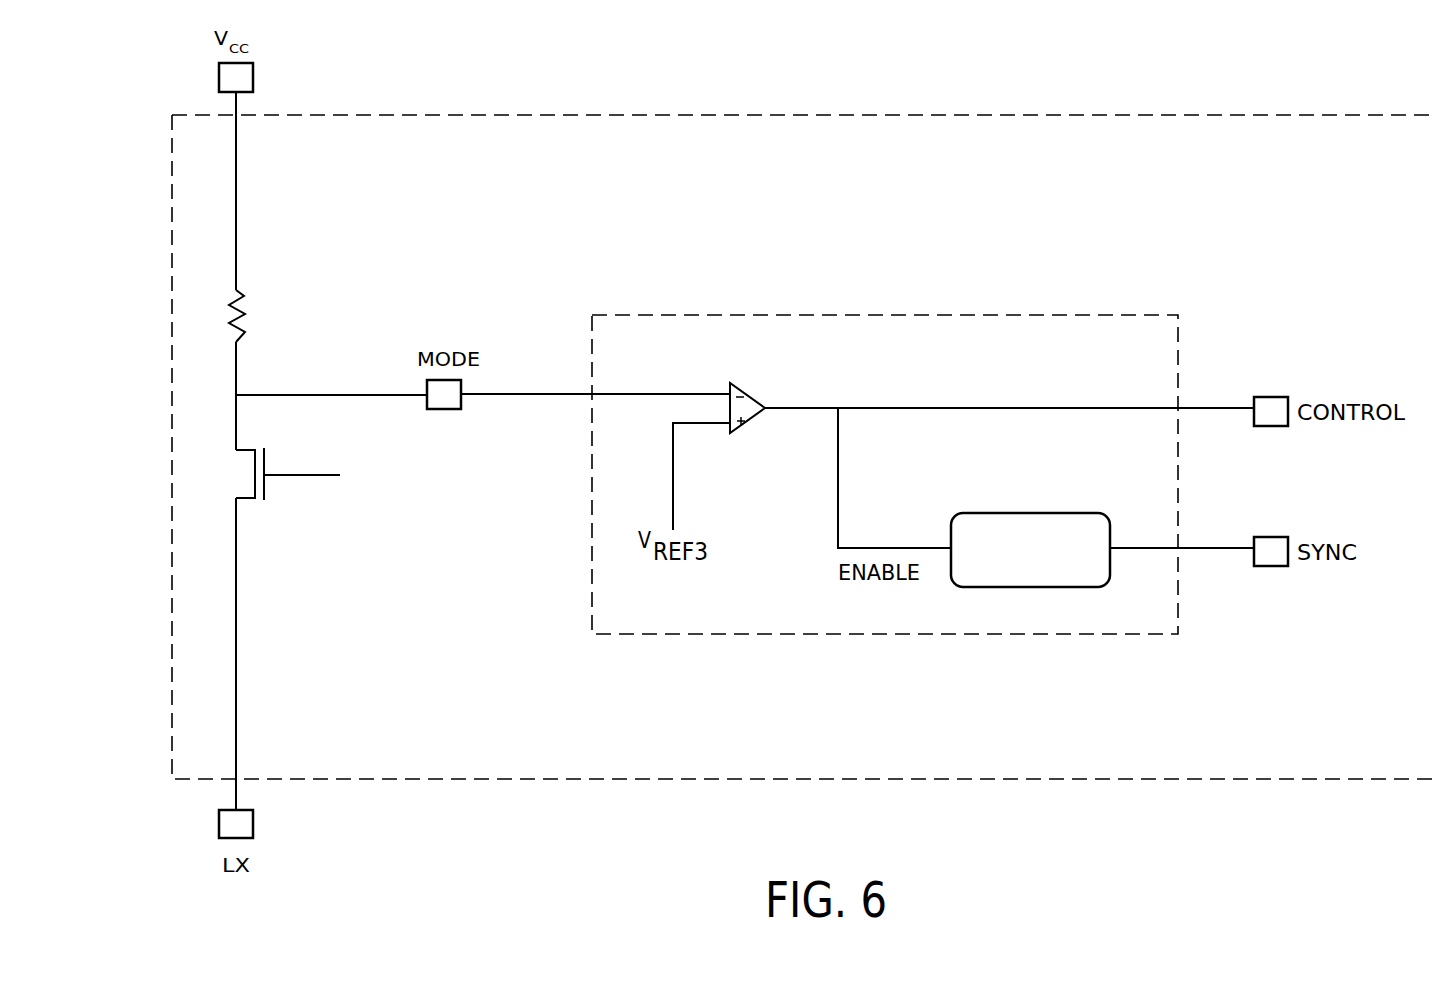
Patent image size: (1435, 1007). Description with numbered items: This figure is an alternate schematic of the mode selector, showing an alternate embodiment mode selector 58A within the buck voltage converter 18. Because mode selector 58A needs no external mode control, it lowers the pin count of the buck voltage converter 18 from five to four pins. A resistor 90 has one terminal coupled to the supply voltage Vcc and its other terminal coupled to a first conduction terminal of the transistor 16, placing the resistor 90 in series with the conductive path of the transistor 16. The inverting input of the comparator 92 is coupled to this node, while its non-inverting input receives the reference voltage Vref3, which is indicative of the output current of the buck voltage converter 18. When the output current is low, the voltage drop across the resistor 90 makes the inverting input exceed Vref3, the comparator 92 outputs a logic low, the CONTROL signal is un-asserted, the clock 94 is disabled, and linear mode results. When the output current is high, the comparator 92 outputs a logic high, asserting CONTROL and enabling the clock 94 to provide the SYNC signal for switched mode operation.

The buck voltage converter 18 is at (152, 414).
The resistor 90 is at (240, 331).
The transistor 16 is at (257, 483).
The mode selector 58A is at (908, 643).
The comparator 92 is at (756, 393).
The clock 94 is at (1060, 513).